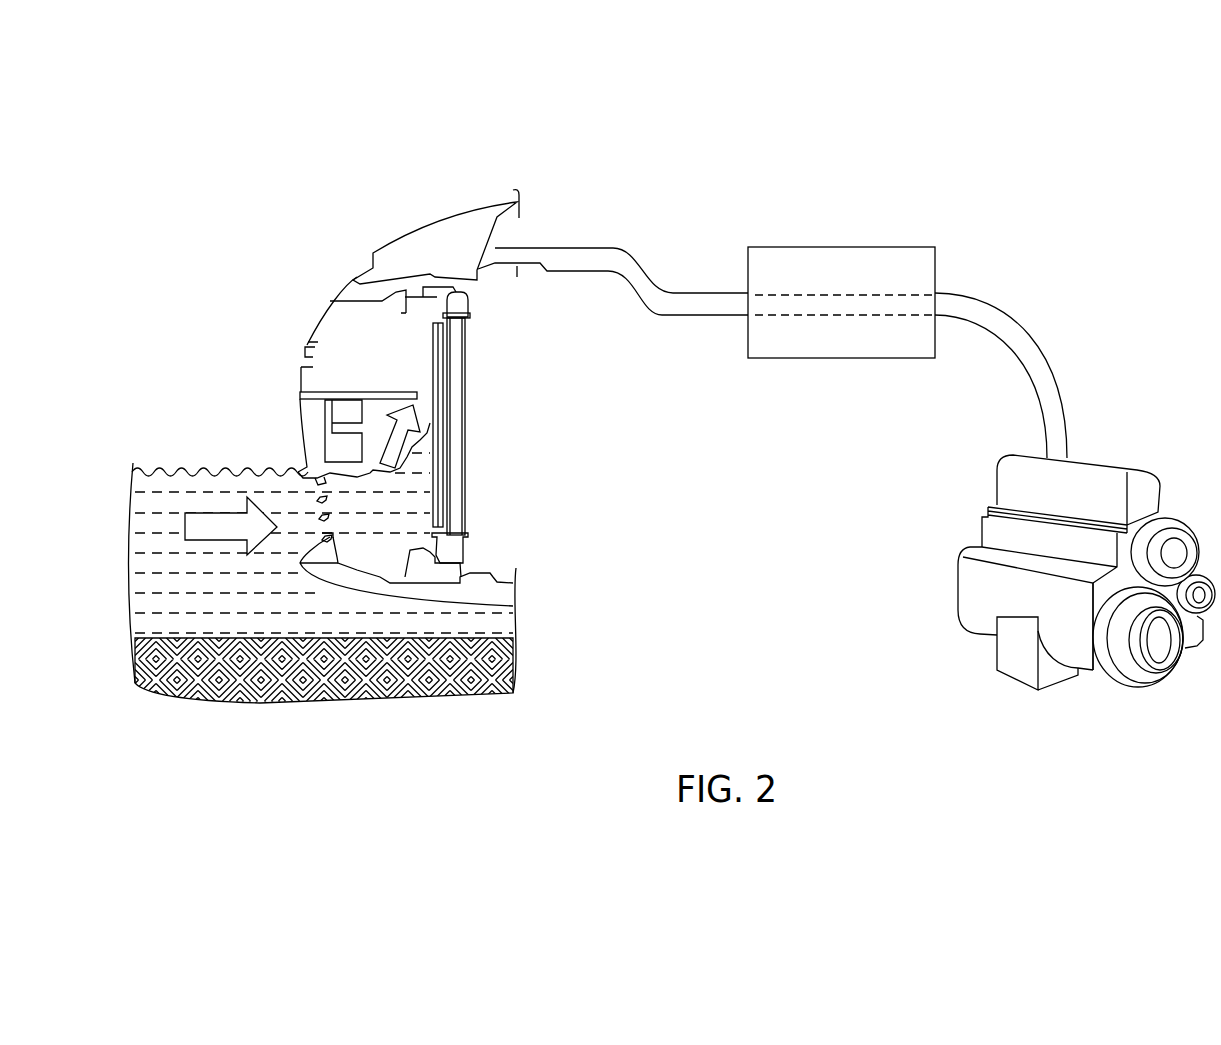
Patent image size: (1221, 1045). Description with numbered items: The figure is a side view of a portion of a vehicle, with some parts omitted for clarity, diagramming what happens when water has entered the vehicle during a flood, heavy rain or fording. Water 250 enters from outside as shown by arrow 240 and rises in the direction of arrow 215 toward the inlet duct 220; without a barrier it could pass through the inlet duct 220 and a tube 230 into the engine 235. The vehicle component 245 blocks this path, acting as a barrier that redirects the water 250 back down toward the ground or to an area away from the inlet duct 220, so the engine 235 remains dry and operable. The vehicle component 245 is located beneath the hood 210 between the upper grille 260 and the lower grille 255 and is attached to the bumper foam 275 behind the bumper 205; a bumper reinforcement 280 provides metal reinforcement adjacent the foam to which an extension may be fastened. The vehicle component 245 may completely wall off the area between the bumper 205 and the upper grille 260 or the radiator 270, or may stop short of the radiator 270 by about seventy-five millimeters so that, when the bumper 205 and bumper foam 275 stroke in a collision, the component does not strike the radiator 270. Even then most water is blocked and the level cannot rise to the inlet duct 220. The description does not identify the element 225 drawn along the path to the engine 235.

The bumper 205 is at (300, 392).
The hood 210 is at (452, 218).
The arrow 215 is at (418, 417).
The inlet duct 220 is at (612, 246).
The control unit 225 is at (877, 247).
The tube 230 is at (1033, 346).
The engine 235 is at (1113, 466).
The arrow 240 is at (233, 600).
The vehicle component 245 is at (403, 392).
The water 250 is at (403, 612).
The lower grille 255 is at (304, 489).
The upper grille 260 is at (296, 340).
The radiator 270 is at (466, 498).
The bumper foam 275 is at (302, 433).
The bumper reinforcement 280 is at (347, 418).